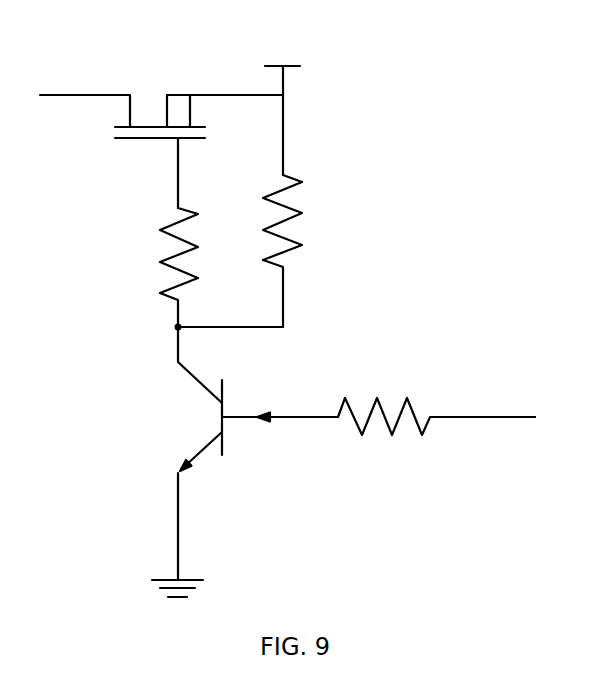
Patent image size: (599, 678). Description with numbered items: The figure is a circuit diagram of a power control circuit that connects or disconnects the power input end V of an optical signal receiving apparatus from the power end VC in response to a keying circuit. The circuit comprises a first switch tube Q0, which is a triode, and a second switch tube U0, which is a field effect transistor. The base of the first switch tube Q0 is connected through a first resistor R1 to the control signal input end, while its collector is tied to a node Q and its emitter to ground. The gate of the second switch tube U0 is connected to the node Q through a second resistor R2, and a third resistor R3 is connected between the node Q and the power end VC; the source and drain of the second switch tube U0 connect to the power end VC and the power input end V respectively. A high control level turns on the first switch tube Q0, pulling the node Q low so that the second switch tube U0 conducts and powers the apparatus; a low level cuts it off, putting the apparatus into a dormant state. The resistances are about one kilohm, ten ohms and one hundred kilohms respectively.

The power input end V is at (85, 92).
The second switch tube U0 is at (199, 127).
The power end VC is at (282, 100).
The second resistor R2 is at (156, 267).
The third resistor R3 is at (304, 251).
The node Q is at (212, 324).
The first switch tube Q0 is at (209, 453).
The first resistor R1 is at (396, 393).